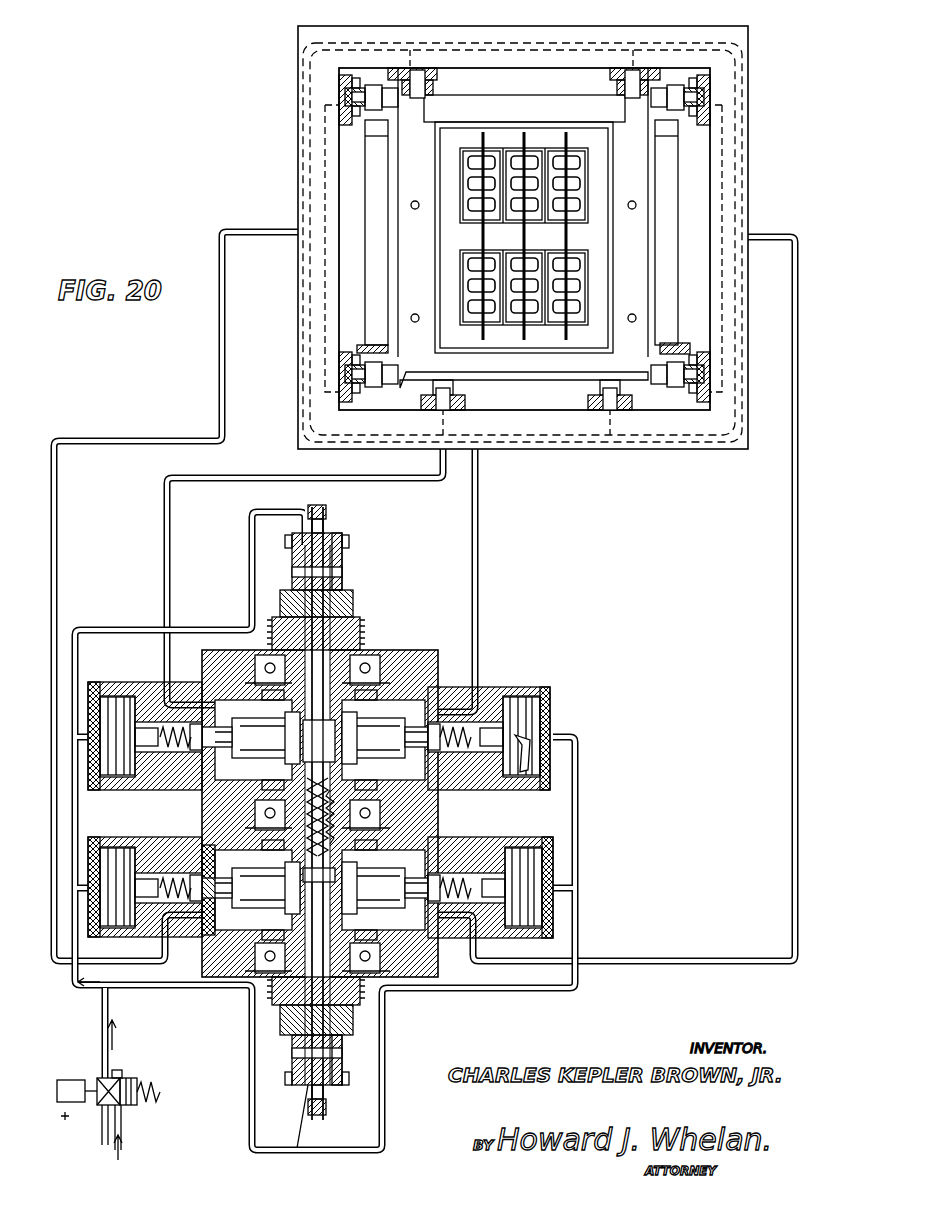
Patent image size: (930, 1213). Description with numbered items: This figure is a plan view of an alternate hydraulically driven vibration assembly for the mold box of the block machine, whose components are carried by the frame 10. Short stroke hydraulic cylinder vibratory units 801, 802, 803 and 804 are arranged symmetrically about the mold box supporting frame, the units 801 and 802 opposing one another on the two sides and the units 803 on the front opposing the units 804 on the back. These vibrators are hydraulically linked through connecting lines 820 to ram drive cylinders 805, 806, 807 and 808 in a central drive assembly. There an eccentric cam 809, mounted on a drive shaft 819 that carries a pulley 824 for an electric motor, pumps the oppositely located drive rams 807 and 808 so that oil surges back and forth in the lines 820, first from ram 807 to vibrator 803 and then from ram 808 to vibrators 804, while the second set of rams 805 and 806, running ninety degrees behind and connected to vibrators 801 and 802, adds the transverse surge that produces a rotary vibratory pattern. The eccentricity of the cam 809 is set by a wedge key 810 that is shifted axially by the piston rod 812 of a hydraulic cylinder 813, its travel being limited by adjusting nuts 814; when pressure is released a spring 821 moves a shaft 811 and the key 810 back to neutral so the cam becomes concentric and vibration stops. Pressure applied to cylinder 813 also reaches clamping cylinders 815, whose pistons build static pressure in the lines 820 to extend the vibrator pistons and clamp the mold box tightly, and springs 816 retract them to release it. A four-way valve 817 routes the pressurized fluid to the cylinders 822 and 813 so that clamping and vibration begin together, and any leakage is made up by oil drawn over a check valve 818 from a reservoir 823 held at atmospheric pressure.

The frame 10 is at (370, 150).
The vibratory unit 801 is at (710, 97).
The vibratory unit 802 is at (345, 96).
The vibratory unit 803 is at (465, 408).
The vibratory unit 804 is at (430, 70).
The ram drive cylinder 805 is at (367, 900).
The ram drive cylinder 806 is at (207, 848).
The drive ram 807 is at (264, 748).
The drive ram 808 is at (372, 750).
The eccentric cam 809 is at (298, 892).
The wedge key 810 is at (305, 714).
The shaft 811 is at (275, 655).
The piston rod 812 is at (305, 557).
The hydraulic cylinder 813 is at (342, 547).
The adjusting nuts 814 is at (326, 515).
The clamping cylinder 815 is at (105, 738).
The spring 816 is at (165, 722).
The four-way valve 817 is at (140, 1105).
The check valve 818 is at (550, 735).
The drive shaft 819 is at (325, 605).
The connecting lines 820 is at (318, 172).
The spring 821 is at (300, 826).
The cylinder 822 is at (118, 735).
The reservoir 823 is at (555, 775).
The pulley 824 is at (362, 630).